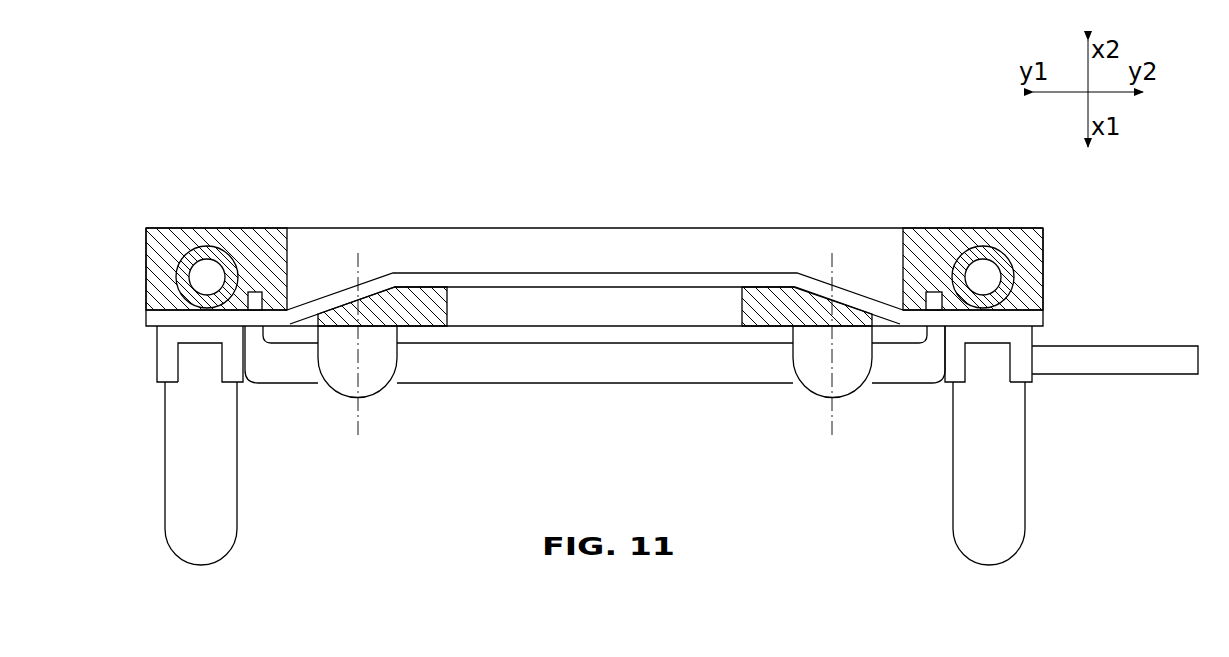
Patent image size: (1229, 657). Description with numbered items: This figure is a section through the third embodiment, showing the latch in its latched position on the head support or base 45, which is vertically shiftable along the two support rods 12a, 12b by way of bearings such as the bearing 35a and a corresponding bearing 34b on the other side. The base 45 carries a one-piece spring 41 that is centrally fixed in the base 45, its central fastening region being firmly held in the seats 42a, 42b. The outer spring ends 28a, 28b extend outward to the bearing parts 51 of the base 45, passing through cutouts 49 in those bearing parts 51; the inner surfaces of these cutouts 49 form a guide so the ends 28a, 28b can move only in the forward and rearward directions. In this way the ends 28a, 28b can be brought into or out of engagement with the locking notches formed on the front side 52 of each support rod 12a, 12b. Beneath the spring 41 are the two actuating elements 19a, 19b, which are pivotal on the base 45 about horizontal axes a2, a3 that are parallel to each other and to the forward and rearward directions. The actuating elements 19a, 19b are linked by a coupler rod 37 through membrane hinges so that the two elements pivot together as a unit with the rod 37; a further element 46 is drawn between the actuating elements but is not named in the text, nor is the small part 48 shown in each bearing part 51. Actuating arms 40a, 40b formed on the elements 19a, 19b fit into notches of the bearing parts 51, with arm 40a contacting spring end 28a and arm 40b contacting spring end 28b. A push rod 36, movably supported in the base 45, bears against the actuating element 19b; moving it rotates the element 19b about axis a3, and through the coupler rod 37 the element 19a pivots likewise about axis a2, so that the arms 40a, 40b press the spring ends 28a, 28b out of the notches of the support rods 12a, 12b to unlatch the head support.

The bearing part 51 is at (150, 224).
The seat 42b is at (180, 246).
The seat 42a is at (977, 245).
The bearing 34b is at (207, 246).
The bearing 35a is at (1000, 247).
The stop 48 is at (257, 285).
The actuating arm 40b is at (262, 300).
The actuating arm 40a is at (932, 300).
The outer spring end 28b is at (160, 307).
The outer spring end 28a is at (1032, 308).
The one-piece spring 41 is at (600, 275).
The head support or base 45 is at (705, 247).
The coupler rod 37 is at (590, 372).
The inner frame 46 is at (262, 330).
The actuating element 19b is at (375, 385).
The actuating element 19a is at (812, 385).
The pivot axis a2 is at (356, 420).
The pivot axis a3 is at (834, 420).
The cutout 49 is at (170, 330).
The front side 52 is at (198, 330).
The support rod 12b is at (218, 518).
The support rod 12a is at (968, 518).
The push rod 36 is at (1147, 355).